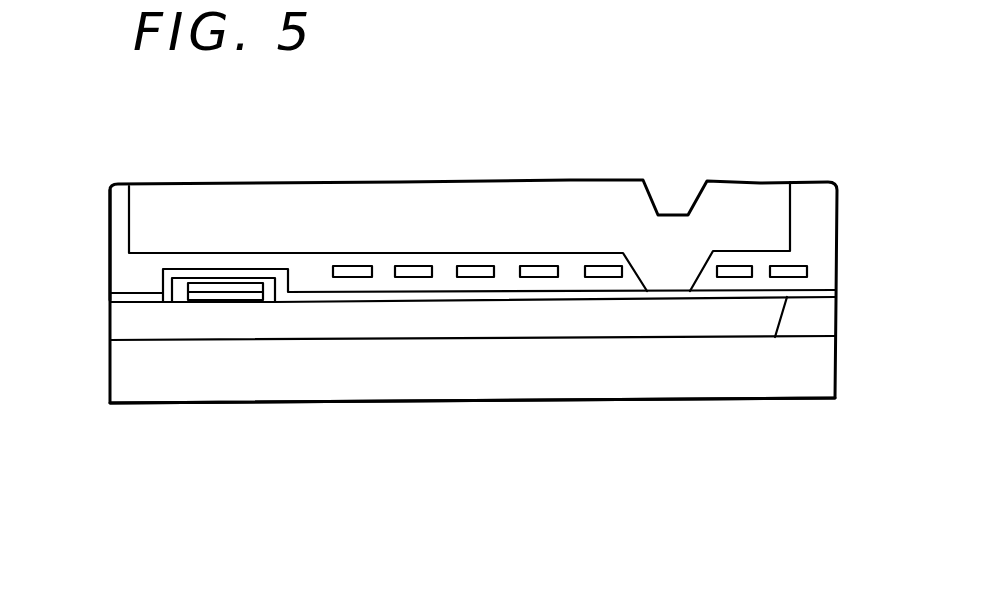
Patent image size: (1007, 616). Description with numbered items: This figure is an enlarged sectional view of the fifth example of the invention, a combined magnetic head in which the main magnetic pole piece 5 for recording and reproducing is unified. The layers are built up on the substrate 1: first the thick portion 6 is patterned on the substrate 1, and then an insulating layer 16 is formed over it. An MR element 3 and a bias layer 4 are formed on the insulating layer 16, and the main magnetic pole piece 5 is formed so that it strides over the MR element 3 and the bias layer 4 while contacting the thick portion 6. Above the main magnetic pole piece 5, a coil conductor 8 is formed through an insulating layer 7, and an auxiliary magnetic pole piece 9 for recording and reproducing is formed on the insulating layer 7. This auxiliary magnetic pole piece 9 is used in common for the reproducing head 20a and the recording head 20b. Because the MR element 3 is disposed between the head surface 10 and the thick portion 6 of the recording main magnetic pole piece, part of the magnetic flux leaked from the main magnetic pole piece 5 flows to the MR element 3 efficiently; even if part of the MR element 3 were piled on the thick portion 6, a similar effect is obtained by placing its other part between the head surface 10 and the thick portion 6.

The substrate 1 is at (447, 380).
The MR element 3 is at (252, 300).
The bias layer 4 is at (256, 284).
The main magnetic pole piece 5 is at (160, 300).
The thick portion 6 is at (525, 320).
The insulating layer 7 is at (146, 273).
The coil conductor 8 is at (482, 267).
The auxiliary magnetic pole piece 9 is at (740, 200).
The head surface 10 is at (108, 330).
The insulating layer 16 is at (238, 322).
The reproducing head 20a is at (108, 270).
The recording head 20b is at (851, 190).